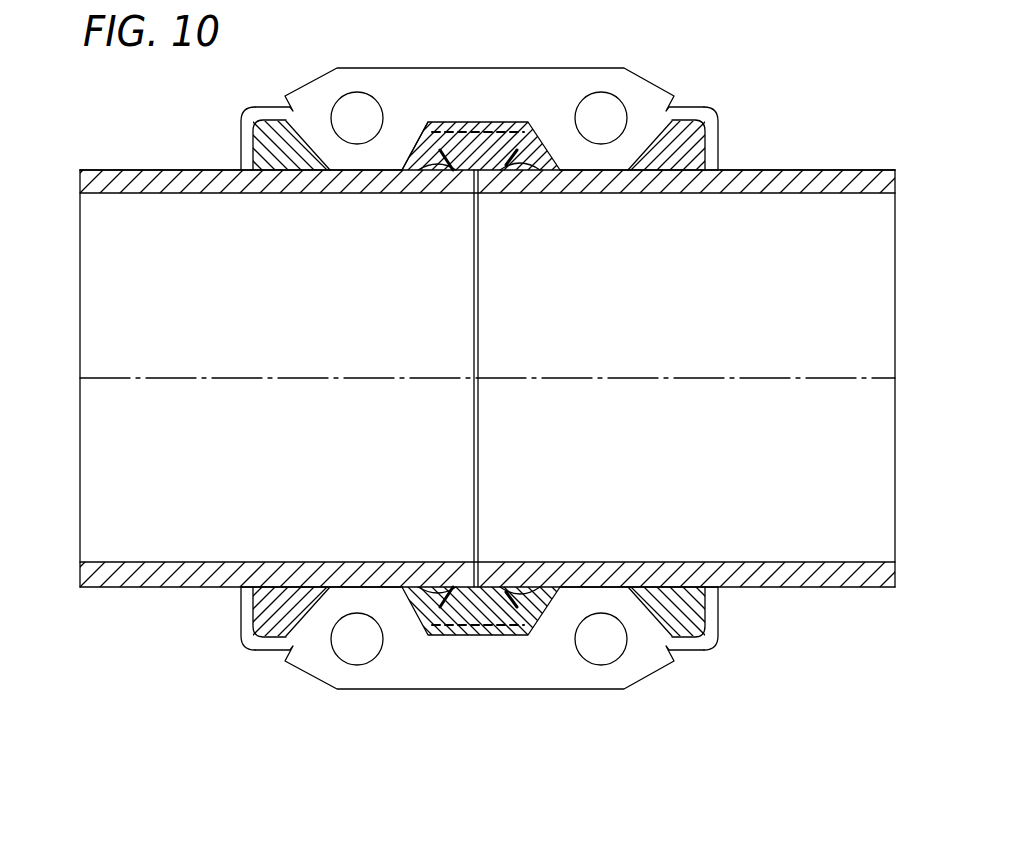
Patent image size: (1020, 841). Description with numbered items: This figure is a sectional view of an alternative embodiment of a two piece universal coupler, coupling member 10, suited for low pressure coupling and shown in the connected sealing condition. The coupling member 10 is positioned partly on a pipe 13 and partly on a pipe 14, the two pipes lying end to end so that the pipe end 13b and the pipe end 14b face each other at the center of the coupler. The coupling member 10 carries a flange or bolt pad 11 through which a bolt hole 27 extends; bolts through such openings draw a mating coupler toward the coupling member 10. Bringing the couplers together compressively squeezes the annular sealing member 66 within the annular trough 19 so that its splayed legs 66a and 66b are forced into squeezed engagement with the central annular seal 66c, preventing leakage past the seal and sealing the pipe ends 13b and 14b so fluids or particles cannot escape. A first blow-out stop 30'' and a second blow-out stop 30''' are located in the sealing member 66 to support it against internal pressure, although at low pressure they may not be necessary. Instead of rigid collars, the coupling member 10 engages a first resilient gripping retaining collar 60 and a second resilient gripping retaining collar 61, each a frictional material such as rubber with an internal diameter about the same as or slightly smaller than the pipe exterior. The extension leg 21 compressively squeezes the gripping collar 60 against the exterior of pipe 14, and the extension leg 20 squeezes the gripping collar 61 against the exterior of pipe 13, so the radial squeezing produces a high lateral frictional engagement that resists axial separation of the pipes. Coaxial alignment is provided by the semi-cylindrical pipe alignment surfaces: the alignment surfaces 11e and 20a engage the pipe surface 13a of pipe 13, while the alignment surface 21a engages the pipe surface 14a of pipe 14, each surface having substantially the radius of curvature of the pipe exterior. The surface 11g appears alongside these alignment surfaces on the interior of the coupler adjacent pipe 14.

The coupling member 10 is at (586, 60).
The flange or bolt pad 11 is at (770, 590).
The first circular pipe alignment surface 11e is at (350, 172).
The housing inner surface portion 11g is at (604, 172).
The pipe 13 is at (105, 195).
The pipe surface 13a is at (120, 170).
The pipe end 13b is at (474, 507).
The pipe 14 is at (897, 345).
The pipe surface 14a is at (805, 170).
The pipe end 14b is at (478, 478).
The annular trough 19 is at (400, 172).
The extension leg 20 is at (265, 107).
The second circular pipe alignment surface 20a is at (247, 172).
The extension leg 21 is at (690, 106).
The second circular pipe alignment surface 21a is at (706, 172).
The bolt hole 27 is at (619, 99).
The first blow-out stop 30'' is at (480, 123).
The second blow-out stop 30''' is at (480, 632).
The resilient gripping retaining collar 60 is at (718, 138).
The resilient gripping retaining collar 61 is at (241, 142).
The annular sealing member 66 is at (491, 182).
The splayed leg 66a is at (437, 172).
The splayed leg 66b is at (532, 172).
The central annular seal 66c is at (466, 172).